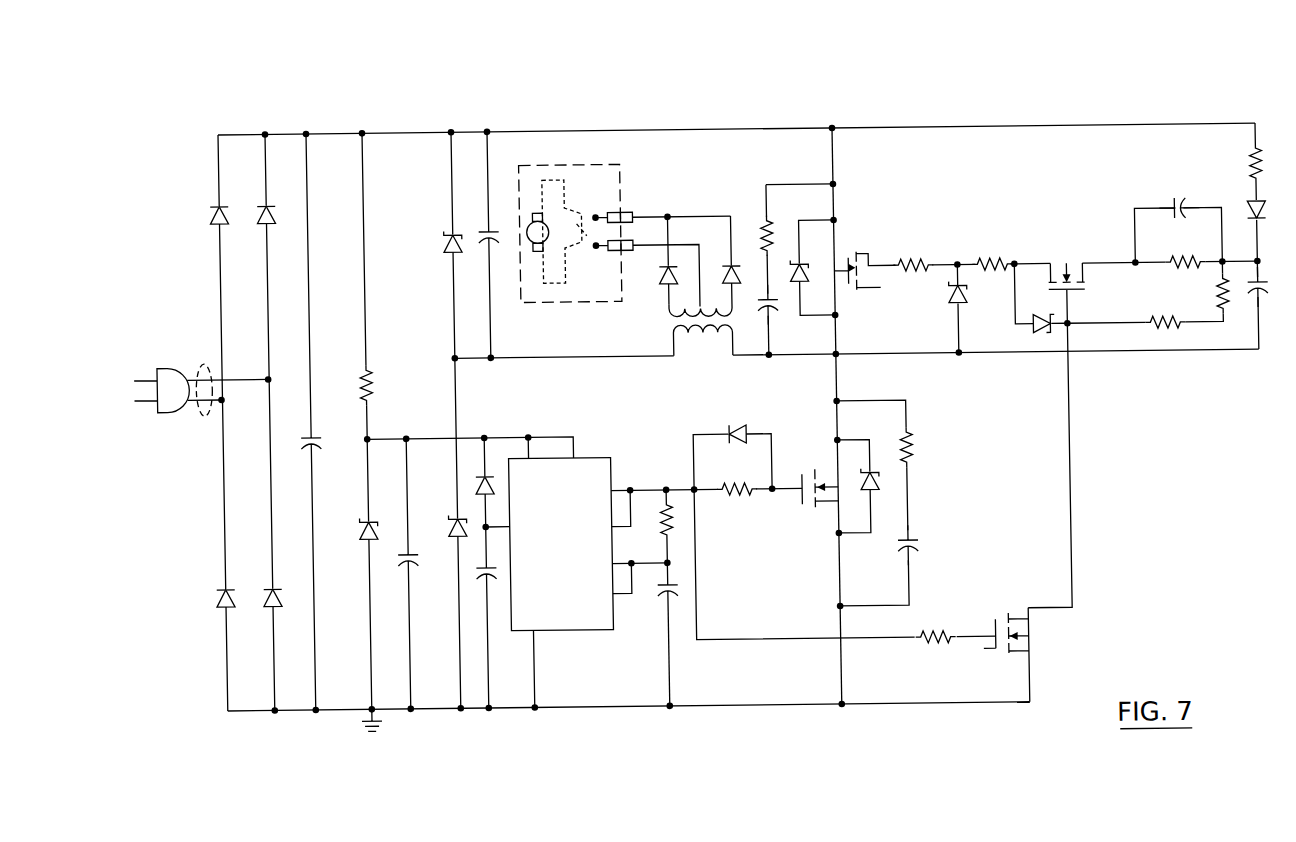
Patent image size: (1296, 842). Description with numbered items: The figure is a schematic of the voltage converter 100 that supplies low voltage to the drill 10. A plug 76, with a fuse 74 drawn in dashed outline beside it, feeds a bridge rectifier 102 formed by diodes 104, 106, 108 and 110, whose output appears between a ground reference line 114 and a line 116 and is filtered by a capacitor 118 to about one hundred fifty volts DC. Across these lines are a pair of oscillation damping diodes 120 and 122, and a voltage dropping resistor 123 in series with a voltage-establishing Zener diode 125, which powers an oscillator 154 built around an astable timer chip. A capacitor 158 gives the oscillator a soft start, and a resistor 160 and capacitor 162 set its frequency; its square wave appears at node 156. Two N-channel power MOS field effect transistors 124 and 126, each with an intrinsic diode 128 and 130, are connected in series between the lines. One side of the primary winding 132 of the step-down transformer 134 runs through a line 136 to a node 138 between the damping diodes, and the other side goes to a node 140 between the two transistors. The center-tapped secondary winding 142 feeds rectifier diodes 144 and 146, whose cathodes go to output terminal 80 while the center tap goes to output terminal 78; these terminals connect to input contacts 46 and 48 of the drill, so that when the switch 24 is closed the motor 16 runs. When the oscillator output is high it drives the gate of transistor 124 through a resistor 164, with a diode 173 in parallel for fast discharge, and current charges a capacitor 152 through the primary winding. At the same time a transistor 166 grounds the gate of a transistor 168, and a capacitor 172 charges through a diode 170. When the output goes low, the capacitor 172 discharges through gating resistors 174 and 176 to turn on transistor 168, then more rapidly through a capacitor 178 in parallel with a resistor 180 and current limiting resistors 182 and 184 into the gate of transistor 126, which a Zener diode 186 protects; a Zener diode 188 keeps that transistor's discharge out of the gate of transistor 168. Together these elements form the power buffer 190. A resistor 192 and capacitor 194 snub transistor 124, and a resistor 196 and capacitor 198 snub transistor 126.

The drill 10 is at (541, 154).
The motor 16 is at (531, 255).
The switch 24 is at (582, 217).
The input contact 46 is at (612, 253).
The input contact 48 is at (622, 216).
The fuse 74 is at (198, 362).
The plug 76 is at (178, 413).
The output terminal 78 is at (633, 257).
The output terminal 80 is at (632, 215).
The voltage converter 100 is at (738, 117).
The bridge rectifier 102 is at (203, 685).
The diode 104 is at (210, 598).
The diode 106 is at (262, 592).
The diode 108 is at (212, 219).
The diode 110 is at (272, 219).
The ground reference line 114 is at (282, 712).
The line 116 is at (573, 134).
The capacitor 118 is at (308, 440).
The oscillation damping diode 120 is at (447, 242).
The oscillation damping diode 122 is at (449, 525).
The voltage dropping resistor 123 is at (366, 366).
The N-channel power MOS field effect transistor 124 is at (803, 522).
The voltage-establishing Zener diode 125 is at (359, 528).
The N-channel power MOS field effect transistor 126 is at (856, 248).
The intrinsic diode 128 is at (872, 493).
The intrinsic diode 130 is at (836, 294).
The primary winding 132 is at (714, 344).
The step-down transformer 134 is at (680, 358).
The line 136 is at (530, 362).
The node 138 is at (450, 362).
The node 140 is at (835, 364).
The center-tapped secondary winding 142 is at (728, 216).
The rectifier diode 144 is at (660, 292).
The rectifier diode 146 is at (736, 270).
The capacitor 152 is at (484, 226).
The oscillator 154 is at (556, 460).
The node 156 is at (661, 487).
The capacitor 158 is at (485, 592).
The resistor 160 is at (676, 560).
The capacitor 162 is at (655, 602).
The resistor 164 is at (728, 503).
The N-channel power MOS field effect transistor 166 is at (1035, 644).
The N-channel power MOS field effect transistor 168 is at (1066, 253).
The diode 170 is at (1249, 212).
The capacitor 172 is at (1242, 310).
The diode 173 is at (730, 450).
The gating resistor 174 is at (1212, 315).
The gating resistor 176 is at (1165, 343).
The capacitor 178 is at (1176, 214).
The resistor 180 is at (1190, 284).
The current limiting resistor 182 is at (990, 272).
The current limiting resistor 184 is at (912, 272).
The Zener diode 186 is at (958, 312).
The Zener diode 188 is at (1038, 343).
The power buffer 190 is at (1133, 496).
The resistor 192 is at (908, 458).
The capacitor 194 is at (908, 556).
The resistor 196 is at (768, 222).
The capacitor 198 is at (770, 318).